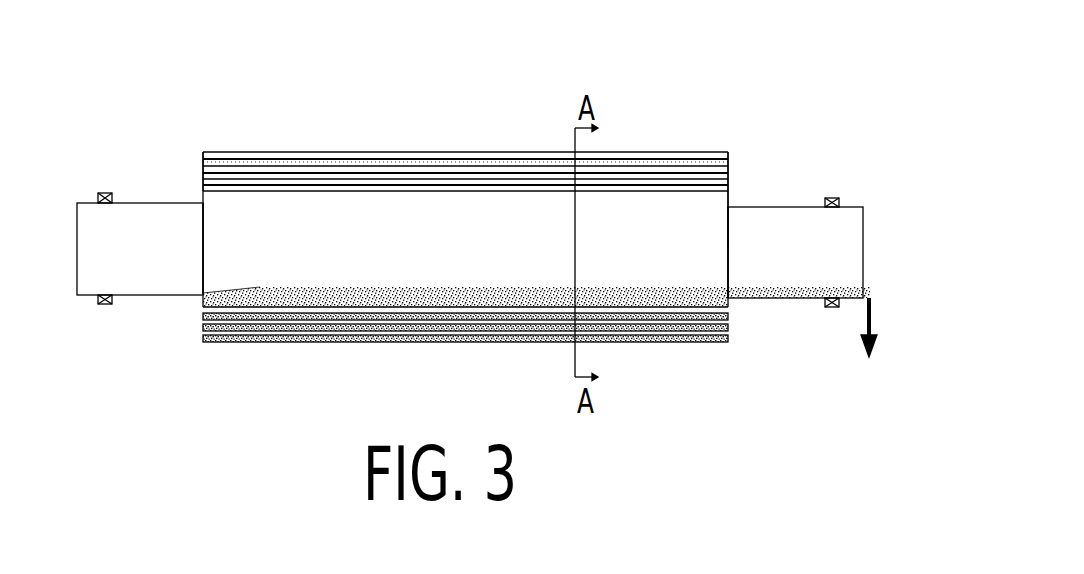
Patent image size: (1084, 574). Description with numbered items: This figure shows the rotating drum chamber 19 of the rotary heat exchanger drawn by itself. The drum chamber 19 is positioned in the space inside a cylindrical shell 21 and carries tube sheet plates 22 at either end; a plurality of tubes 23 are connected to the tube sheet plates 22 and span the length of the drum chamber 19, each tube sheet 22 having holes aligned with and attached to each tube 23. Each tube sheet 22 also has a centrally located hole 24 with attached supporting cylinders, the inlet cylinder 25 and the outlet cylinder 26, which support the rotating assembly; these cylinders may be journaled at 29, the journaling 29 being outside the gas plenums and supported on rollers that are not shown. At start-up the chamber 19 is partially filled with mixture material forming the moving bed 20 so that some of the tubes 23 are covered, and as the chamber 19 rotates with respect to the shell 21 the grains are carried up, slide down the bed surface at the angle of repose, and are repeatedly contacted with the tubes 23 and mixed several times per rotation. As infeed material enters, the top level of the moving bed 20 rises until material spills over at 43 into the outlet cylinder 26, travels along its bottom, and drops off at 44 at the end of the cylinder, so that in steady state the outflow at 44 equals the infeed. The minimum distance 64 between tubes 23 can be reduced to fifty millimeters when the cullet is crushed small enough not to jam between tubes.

The rotating drum chamber 19 is at (490, 225).
The moving bed 20 is at (292, 290).
The cylindrical shell 21 is at (440, 153).
The tube sheet plate 22 is at (200, 155).
The tube 23 is at (607, 162).
The centrally located hole 24 is at (203, 203).
The inlet cylinder 25 is at (145, 295).
The outlet cylinder 26 is at (795, 299).
The journaling 29 is at (99, 193).
The spill-over point 43 is at (728, 247).
The material drop-off point 44 is at (875, 313).
The minimum distance between tubes 64 is at (202, 330).